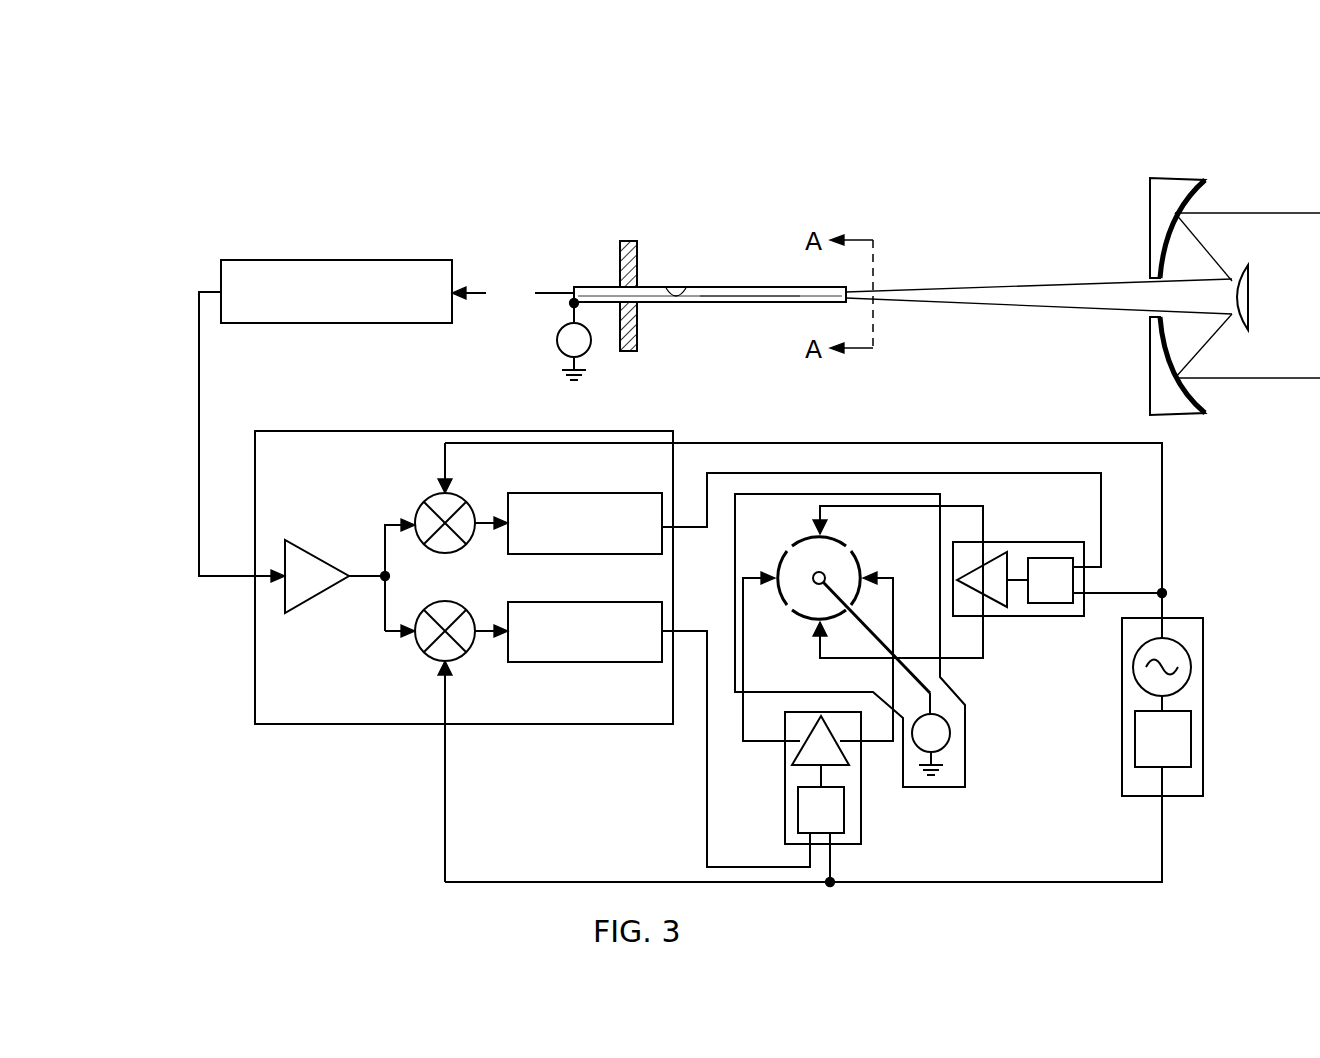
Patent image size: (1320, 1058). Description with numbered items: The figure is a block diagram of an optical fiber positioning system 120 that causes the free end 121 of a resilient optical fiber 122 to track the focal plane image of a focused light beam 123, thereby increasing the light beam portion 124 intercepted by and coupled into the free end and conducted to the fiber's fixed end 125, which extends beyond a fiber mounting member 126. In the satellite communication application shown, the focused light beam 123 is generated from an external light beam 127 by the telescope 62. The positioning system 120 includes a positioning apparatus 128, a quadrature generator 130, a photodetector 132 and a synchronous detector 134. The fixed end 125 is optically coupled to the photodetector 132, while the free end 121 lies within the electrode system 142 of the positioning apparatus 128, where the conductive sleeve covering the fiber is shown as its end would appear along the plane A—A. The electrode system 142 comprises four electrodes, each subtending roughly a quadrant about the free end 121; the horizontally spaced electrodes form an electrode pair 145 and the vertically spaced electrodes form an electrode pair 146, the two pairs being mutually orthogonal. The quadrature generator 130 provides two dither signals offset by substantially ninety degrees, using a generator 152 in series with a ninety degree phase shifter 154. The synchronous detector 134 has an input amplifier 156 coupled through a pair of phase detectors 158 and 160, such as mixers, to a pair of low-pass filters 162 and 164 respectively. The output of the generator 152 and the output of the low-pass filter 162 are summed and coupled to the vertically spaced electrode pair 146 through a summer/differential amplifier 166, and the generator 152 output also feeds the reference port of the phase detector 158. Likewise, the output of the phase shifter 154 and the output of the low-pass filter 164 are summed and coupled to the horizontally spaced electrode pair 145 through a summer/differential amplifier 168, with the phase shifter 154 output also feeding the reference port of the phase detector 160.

The optical fiber positioning system 120 is at (284, 213).
The photodetector 132 is at (400, 248).
The light beam portion 124 is at (513, 293).
The fixed end 125 is at (581, 287).
The fiber mounting member 126 is at (655, 248).
The resilient optical fiber 122 is at (686, 272).
The free end 121 is at (833, 304).
The focused light beam 123 is at (998, 288).
The telescope 62 is at (1136, 200).
The external light beam 127 is at (1250, 213).
The positioning apparatus 128 is at (863, 480).
The synchronous detector 134 is at (243, 696).
The input amplifier 156 is at (318, 542).
The phase detector 158 is at (428, 494).
The phase detector 160 is at (428, 660).
The low-pass filter 162 is at (633, 493).
The low-pass filter 164 is at (633, 662).
The electrode system 142 is at (760, 558).
The electrode pair 145 is at (866, 567).
The electrode pair 146 is at (805, 625).
The summer/differential amplifier 166 is at (1030, 617).
The summer/differential amplifier 168 is at (861, 797).
The quadrature generator 130 is at (1220, 607).
The generator 152 is at (1191, 662).
The ninety degree phase shifter 154 is at (1191, 737).